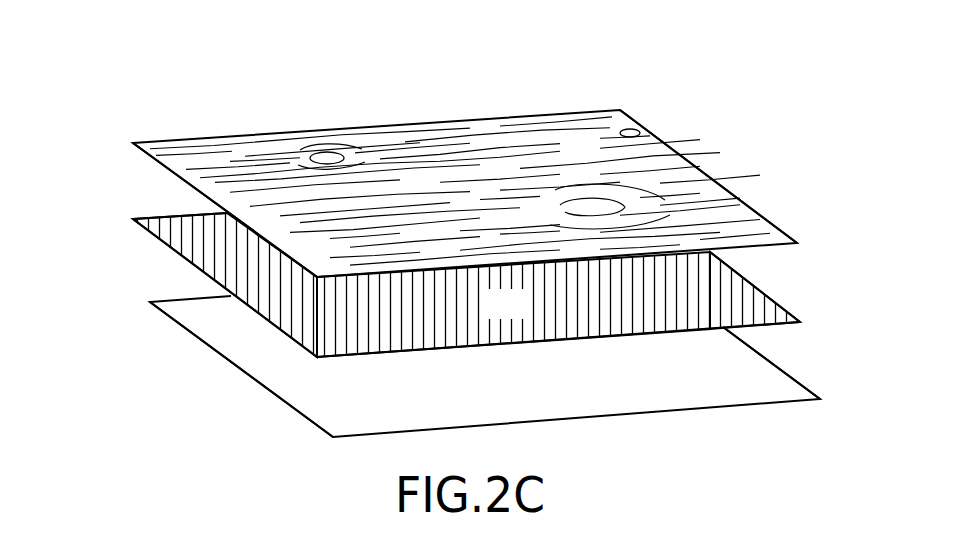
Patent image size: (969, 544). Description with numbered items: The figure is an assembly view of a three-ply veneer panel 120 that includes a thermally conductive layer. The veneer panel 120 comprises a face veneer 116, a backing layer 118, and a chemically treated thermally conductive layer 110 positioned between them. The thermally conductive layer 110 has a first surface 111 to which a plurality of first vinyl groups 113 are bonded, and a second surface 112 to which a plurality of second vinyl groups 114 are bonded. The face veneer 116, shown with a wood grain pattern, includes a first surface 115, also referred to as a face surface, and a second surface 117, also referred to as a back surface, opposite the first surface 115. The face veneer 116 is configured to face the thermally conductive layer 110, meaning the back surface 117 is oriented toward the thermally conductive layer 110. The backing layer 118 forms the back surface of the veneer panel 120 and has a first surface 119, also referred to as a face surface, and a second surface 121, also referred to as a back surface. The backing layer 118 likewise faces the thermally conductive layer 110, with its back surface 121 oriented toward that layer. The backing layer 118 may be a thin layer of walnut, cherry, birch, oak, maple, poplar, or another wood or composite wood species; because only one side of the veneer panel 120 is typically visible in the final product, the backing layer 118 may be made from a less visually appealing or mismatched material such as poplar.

The veneer panel 120 is at (141, 85).
The first surface 115 is at (460, 142).
The face veneer 116 is at (700, 169).
The second surface 117 is at (162, 164).
The first surface 111 is at (527, 315).
The thermally conductive layer 110 is at (757, 287).
The second surface 112 is at (367, 354).
The first vinyl groups 113 is at (208, 247).
The second vinyl groups 114 is at (250, 318).
The second surface 121 is at (595, 386).
The backing layer 118 is at (777, 373).
The first surface 119 is at (304, 416).